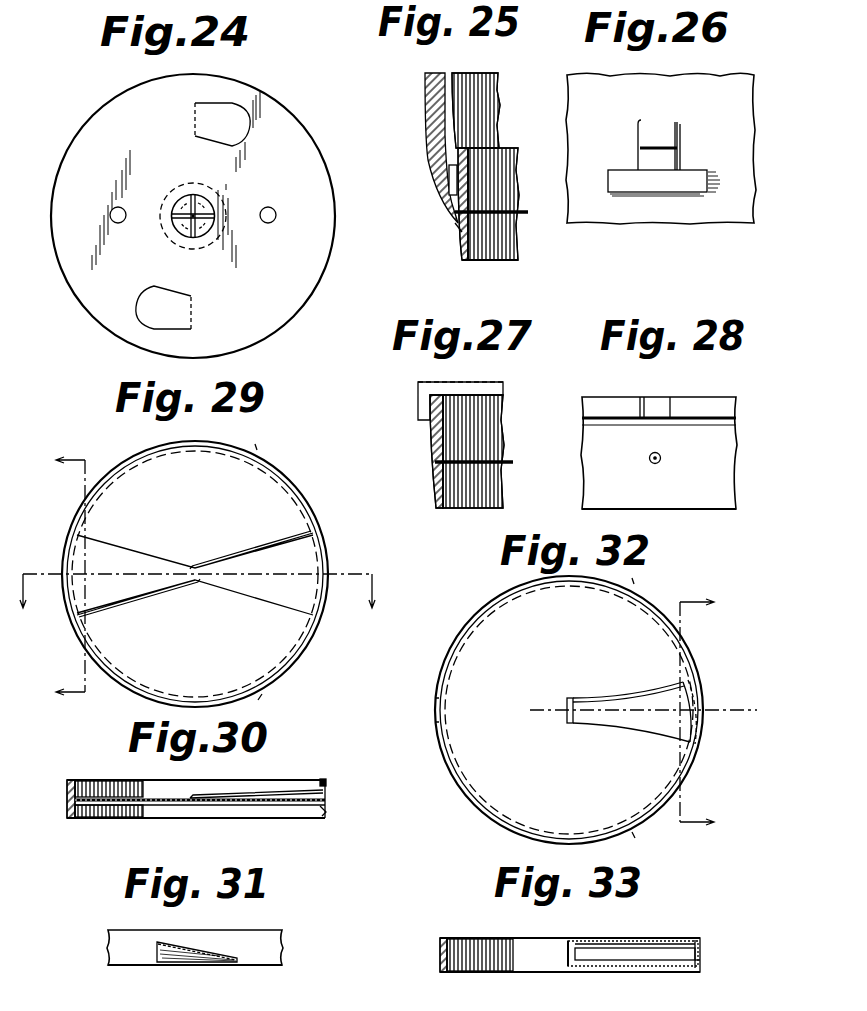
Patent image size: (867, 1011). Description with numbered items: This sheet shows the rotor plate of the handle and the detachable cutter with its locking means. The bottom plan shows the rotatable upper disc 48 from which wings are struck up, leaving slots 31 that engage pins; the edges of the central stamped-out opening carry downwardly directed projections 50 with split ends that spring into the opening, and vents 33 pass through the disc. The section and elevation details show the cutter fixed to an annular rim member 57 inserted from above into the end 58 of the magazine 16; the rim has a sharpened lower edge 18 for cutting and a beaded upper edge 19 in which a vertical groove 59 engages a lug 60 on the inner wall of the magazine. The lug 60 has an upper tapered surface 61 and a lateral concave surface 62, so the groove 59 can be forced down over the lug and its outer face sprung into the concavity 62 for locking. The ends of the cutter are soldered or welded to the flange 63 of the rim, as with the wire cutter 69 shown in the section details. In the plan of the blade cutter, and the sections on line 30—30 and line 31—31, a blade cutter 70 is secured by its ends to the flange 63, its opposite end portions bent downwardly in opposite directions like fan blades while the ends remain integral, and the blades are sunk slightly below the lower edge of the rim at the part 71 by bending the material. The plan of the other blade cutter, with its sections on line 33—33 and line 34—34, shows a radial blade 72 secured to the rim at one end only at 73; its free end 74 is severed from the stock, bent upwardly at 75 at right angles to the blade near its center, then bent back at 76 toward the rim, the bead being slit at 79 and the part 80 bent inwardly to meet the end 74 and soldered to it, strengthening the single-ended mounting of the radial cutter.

In FIG. 25, the magazine 16 is at (426, 112).
In FIG. 26, the magazine 16 is at (661, 148).
In FIG. 25, the lower edge 18 is at (470, 262).
In FIG. 27, the lower edge 18 is at (440, 508).
In FIG. 28, the lower edge 18 is at (705, 510).
In FIG. 30, the lower edge 18 is at (295, 818).
In FIG. 31, the lower edge 18 is at (262, 966).
In FIG. 33, the lower edge 18 is at (445, 973).
In FIG. 25, the beaded upper edge 19 is at (472, 150).
In FIG. 27, the beaded upper edge 19 is at (420, 410).
In FIG. 28, the beaded upper edge 19 is at (695, 407).
In FIG. 29, the beaded upper edge 19 is at (290, 672).
In FIG. 30, the beaded upper edge 19 is at (322, 785).
In FIG. 32, the beaded upper edge 19 is at (500, 594).
In FIG. 33, the beaded upper edge 19 is at (440, 940).
In FIG. 29, the section line 30— 30 is at (197, 603).
In FIG. 24, the slots 31 is at (232, 105).
In FIG. 29, the slots 31 is at (53, 576).
In FIG. 24, the vents 33 is at (125, 210).
In FIG. 32, the vents 33 is at (644, 710).
In FIG. 32, the section line 34— 34 is at (712, 712).
In FIG. 24, the upper disc 48 is at (193, 216).
In FIG. 24, the downwardly directed projections 50 is at (210, 208).
In FIG. 25, the annular rim member 57 is at (462, 246).
In FIG. 27, the annular rim member 57 is at (432, 450).
In FIG. 28, the annular rim member 57 is at (725, 455).
In FIG. 29, the annular rim member 57 is at (285, 475).
In FIG. 30, the annular rim member 57 is at (68, 803).
In FIG. 31, the annular rim member 57 is at (242, 938).
In FIG. 33, the annular rim member 57 is at (440, 956).
In FIG. 25, the end of the magazine 58 is at (455, 212).
In FIG. 28, the vertical groove 59 is at (652, 400).
In FIG. 29, the vertical groove 59 is at (260, 450).
In FIG. 32, the vertical groove 59 is at (638, 590).
In FIG. 26, the lug 60 is at (619, 180).
In FIG. 25, the upper tapered surface 61 is at (460, 132).
In FIG. 26, the upper tapered surface 61 is at (665, 141).
In FIG. 25, the lateral concave surface 62 is at (452, 165).
In FIG. 26, the lateral concave surface 62 is at (662, 165).
In FIG. 25, the flange 63 is at (461, 230).
In FIG. 27, the flange 63 is at (431, 432).
In FIG. 28, the flange 63 is at (635, 458).
In FIG. 30, the flange 63 is at (320, 801).
In FIG. 25, the wire cutter 69 is at (528, 212).
In FIG. 27, the wire cutter 69 is at (513, 460).
In FIG. 28, the wire cutter 69 is at (652, 465).
In FIG. 29, the blade cutter 70 is at (245, 565).
In FIG. 30, the blade cutter 70 is at (262, 796).
In FIG. 31, the blade cutter 70 is at (183, 945).
In FIG. 30, the spacing part 71 is at (322, 814).
In FIG. 33, the radial blade 72 is at (615, 963).
In FIG. 33, the securing point 73 is at (702, 962).
In FIG. 32, the severed end 74 is at (672, 700).
In FIG. 33, the severed end 74 is at (675, 944).
In FIG. 33, the upward bend 75 is at (568, 960).
In FIG. 33, the return bend 76 is at (572, 944).
In FIG. 32, the slit 79 is at (684, 695).
In FIG. 33, the slit 79 is at (700, 950).
In FIG. 32, the inturned bead part 80 is at (692, 700).
In FIG. 33, the inturned bead part 80 is at (695, 944).